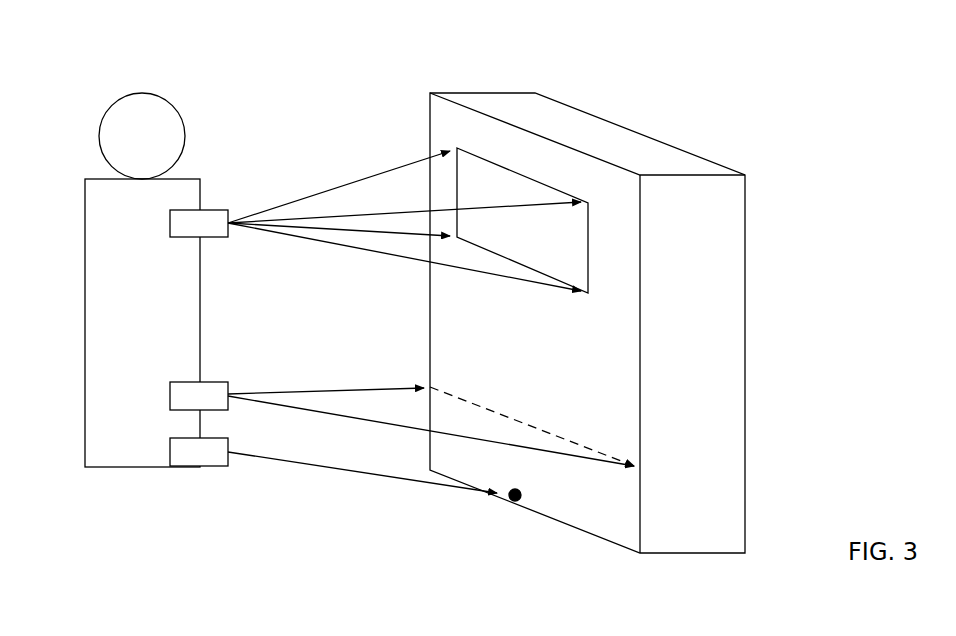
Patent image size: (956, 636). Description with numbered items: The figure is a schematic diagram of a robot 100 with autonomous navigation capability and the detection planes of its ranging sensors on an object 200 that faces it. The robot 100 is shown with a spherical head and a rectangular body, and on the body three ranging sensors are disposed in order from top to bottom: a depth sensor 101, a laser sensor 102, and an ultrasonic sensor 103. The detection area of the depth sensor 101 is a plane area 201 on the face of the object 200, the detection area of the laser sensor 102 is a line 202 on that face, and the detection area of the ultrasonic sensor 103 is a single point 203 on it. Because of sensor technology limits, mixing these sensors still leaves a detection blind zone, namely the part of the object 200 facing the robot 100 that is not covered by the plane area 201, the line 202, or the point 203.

The robot 100 is at (188, 170).
The depth sensor 101 is at (170, 222).
The laser sensor 102 is at (170, 393).
The ultrasonic sensor 103 is at (170, 450).
The object 200 is at (573, 132).
The plane area 201 is at (555, 248).
The line 202 is at (517, 418).
The point 203 is at (523, 493).